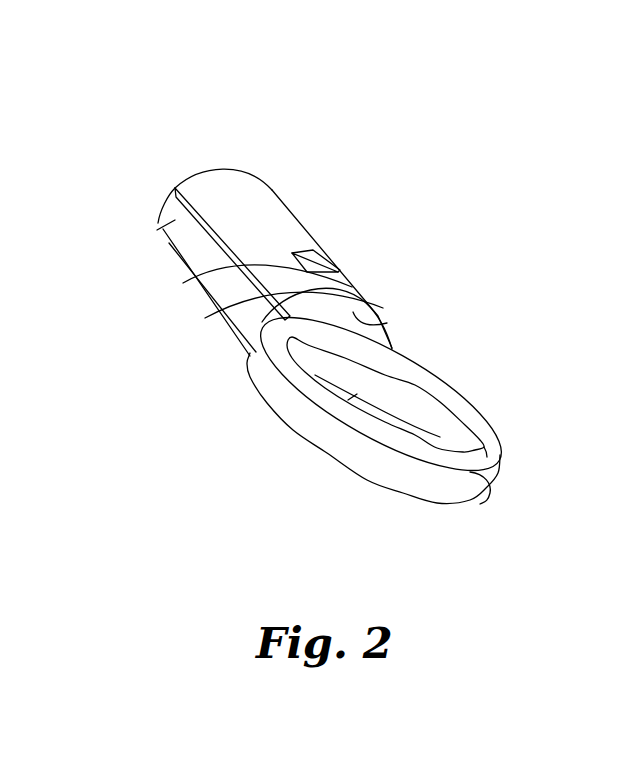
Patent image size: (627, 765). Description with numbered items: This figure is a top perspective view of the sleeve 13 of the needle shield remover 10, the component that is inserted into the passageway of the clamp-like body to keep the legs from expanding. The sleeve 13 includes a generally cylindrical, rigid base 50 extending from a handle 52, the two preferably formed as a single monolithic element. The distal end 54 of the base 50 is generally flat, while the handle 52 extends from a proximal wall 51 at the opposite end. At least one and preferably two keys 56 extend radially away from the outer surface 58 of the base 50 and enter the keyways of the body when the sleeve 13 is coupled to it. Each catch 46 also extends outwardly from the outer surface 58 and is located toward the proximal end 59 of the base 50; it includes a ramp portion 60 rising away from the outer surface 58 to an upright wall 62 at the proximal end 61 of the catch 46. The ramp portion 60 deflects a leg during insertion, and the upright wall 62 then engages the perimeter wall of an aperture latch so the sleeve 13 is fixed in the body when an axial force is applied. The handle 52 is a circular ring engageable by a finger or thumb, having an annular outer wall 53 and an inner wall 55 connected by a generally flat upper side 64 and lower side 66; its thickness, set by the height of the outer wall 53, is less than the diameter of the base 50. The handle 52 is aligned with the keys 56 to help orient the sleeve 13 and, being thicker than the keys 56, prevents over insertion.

The needle shield remover 10 is at (130, 143).
The sleeve 13 is at (472, 346).
The catch 46 is at (290, 222).
The base 50 is at (225, 325).
The proximal wall 51 is at (384, 326).
The handle 52 is at (524, 424).
The annular outer wall 53 is at (336, 450).
The distal end 54 is at (218, 171).
The inner wall 55 is at (500, 446).
The key 56 is at (167, 240).
The outer surface 58 is at (247, 185).
The proximal end 59 is at (208, 317).
The ramp portion 60 is at (190, 280).
The proximal end 61 is at (330, 268).
The upright wall 62 is at (345, 286).
The upper side 64 is at (484, 490).
The lower side 66 is at (407, 498).